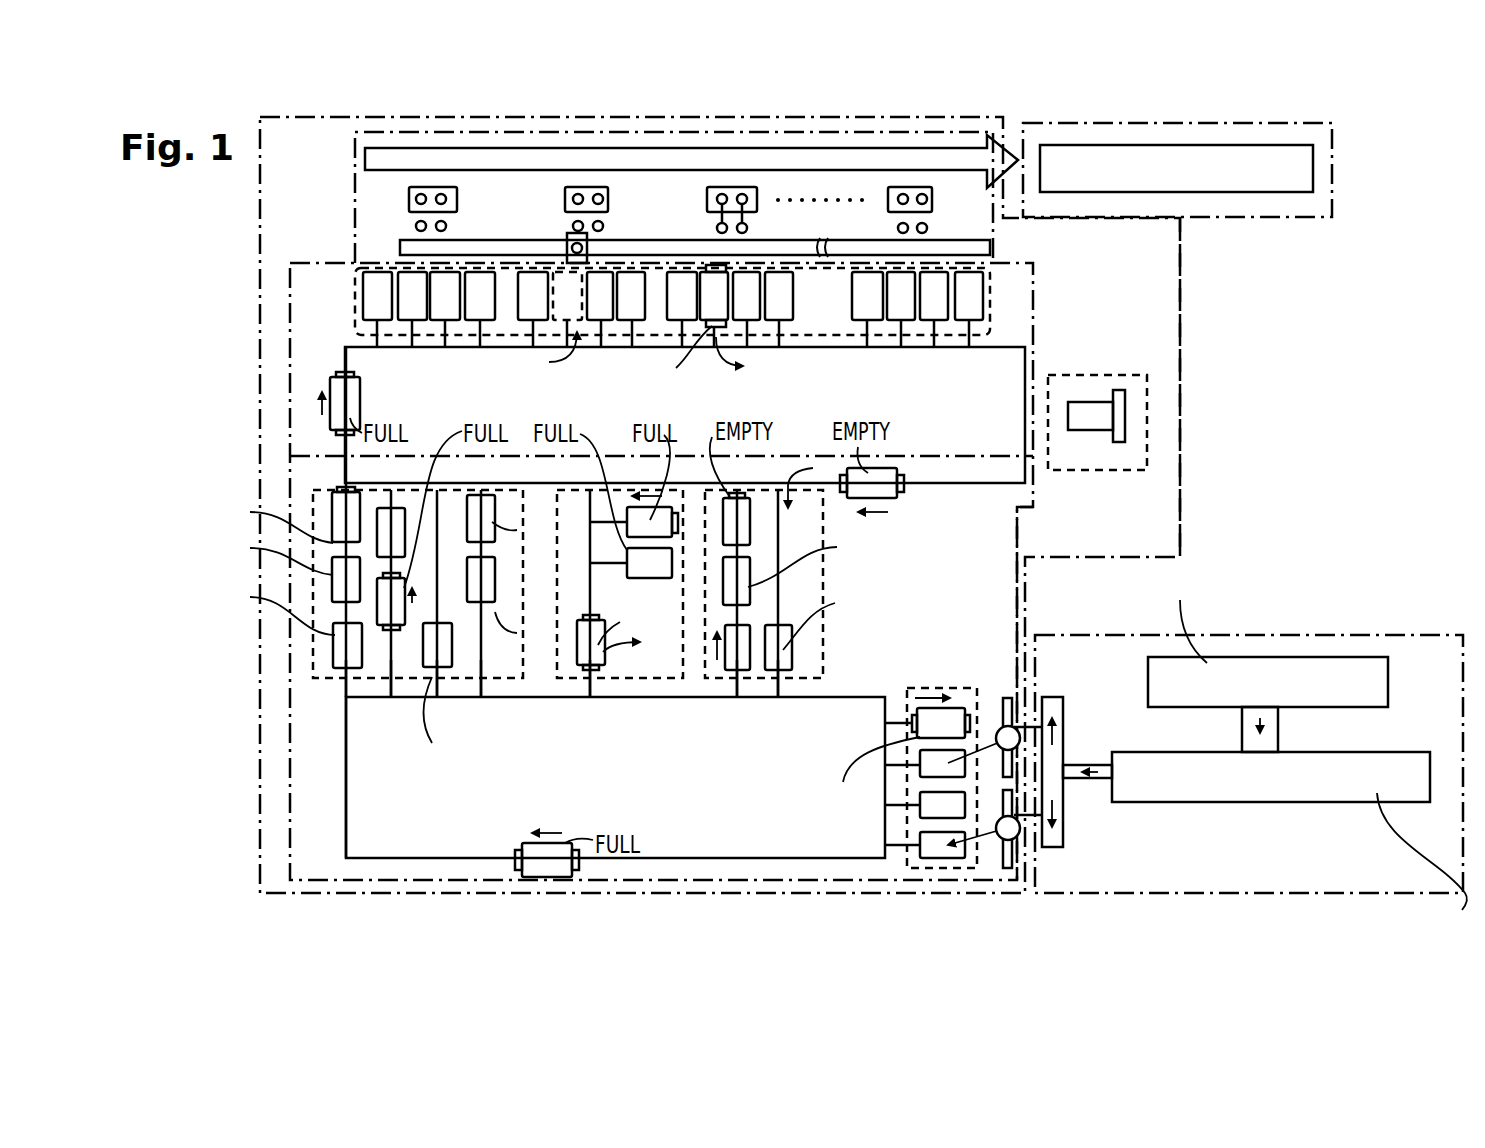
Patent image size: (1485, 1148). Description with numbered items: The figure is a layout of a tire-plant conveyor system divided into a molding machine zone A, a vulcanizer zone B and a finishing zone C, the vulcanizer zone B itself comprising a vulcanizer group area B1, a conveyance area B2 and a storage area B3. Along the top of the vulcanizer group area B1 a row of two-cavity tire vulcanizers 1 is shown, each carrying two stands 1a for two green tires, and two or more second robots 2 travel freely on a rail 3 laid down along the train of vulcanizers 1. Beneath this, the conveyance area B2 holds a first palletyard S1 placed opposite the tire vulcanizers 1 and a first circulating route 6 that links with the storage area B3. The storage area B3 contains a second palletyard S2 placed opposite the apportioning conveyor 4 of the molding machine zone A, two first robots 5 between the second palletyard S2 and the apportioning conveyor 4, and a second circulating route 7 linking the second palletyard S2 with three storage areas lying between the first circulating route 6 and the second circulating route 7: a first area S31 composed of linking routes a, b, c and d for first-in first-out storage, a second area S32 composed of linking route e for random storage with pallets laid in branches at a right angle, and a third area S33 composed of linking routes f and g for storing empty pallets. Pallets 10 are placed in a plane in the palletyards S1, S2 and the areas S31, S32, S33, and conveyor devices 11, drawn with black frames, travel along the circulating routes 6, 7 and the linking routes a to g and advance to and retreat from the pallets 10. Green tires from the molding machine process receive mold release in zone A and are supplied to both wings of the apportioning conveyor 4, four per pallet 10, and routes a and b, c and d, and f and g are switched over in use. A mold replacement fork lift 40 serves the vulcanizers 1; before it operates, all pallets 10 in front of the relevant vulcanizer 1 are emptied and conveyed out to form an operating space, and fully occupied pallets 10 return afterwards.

The tire vulcanizer 1 is at (476, 182).
The stand 1a is at (414, 226).
The second robot 2 is at (567, 240).
The rail 3 is at (504, 240).
The apportioning conveyor 4 is at (1065, 813).
The first robot 5 is at (998, 726).
The first circulating route 6 is at (983, 492).
The second circulating route 7 is at (863, 688).
The pallet 10 is at (362, 405).
The conveyor device 11 is at (366, 374).
The mold replacement fork lift 40 is at (1127, 423).
The molding machine zone A is at (1338, 636).
The vulcanizer zone B is at (1182, 513).
The vulcanizer group area B1 is at (1004, 248).
The conveyance area B2 is at (1038, 345).
The storage area B3 is at (1022, 528).
The finishing zone C is at (1312, 220).
The first palletyard S1 is at (997, 335).
The second palletyard S2 is at (932, 688).
The first area S31 is at (510, 682).
The second area S32 is at (633, 683).
The third area S33 is at (803, 640).
The linking route a is at (350, 678).
The linking route b is at (392, 678).
The linking route c is at (438, 676).
The linking route d is at (482, 678).
The linking route e is at (584, 677).
The linking route f is at (735, 672).
The linking route g is at (782, 673).